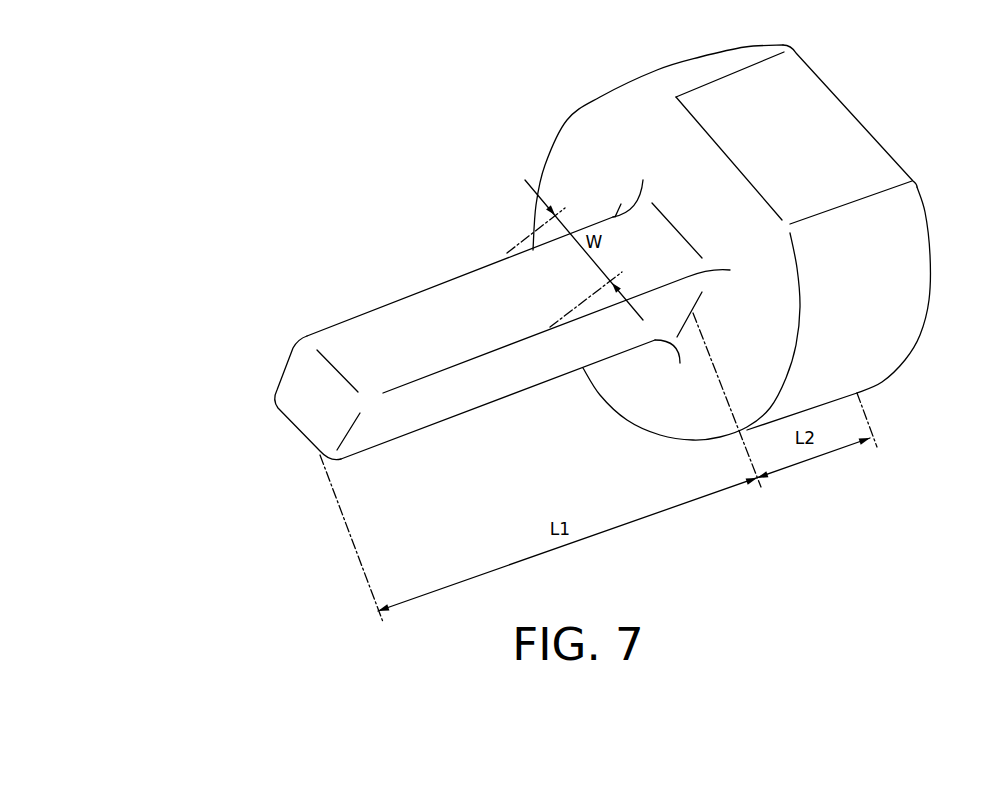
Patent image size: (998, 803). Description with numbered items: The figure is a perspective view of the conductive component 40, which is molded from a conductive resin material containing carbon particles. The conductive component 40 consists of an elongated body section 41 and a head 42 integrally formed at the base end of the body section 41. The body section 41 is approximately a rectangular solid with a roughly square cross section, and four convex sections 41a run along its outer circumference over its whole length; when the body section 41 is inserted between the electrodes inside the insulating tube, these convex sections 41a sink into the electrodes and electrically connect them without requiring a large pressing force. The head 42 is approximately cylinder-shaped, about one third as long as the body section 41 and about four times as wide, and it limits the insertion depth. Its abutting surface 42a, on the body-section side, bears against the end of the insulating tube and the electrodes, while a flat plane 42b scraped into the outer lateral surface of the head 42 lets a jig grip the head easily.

The conductive component 40 is at (438, 153).
The body section 41 is at (364, 326).
The convex sections 41a is at (422, 292).
The head 42 is at (868, 320).
The abutting surface 42a is at (600, 168).
The flat plane 42b is at (792, 133).